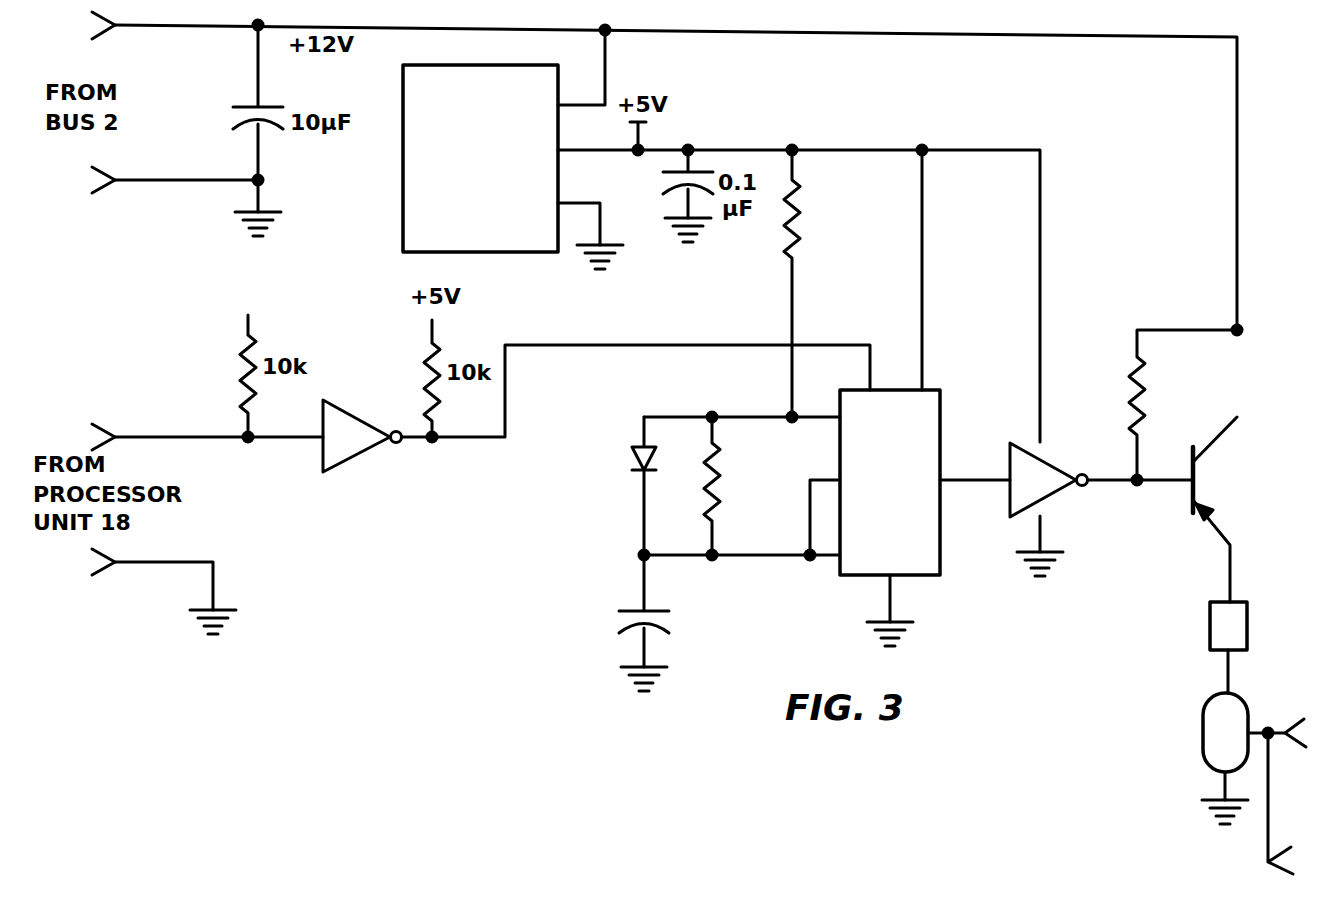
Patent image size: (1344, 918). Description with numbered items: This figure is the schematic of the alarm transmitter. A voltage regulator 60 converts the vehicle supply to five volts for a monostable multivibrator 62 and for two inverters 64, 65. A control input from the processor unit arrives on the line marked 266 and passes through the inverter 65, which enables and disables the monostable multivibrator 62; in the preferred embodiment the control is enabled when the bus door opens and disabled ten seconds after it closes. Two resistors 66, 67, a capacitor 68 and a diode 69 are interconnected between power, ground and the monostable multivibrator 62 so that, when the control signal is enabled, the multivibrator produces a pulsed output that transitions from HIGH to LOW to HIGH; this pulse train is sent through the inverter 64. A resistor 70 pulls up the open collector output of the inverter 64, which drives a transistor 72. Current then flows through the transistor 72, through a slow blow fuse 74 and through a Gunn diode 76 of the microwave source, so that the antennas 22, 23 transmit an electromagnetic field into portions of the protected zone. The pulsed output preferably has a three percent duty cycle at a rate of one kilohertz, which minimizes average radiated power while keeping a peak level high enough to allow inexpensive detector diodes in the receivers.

The voltage regulator 60 is at (402, 219).
The monostable multivibrator 62 is at (942, 562).
The inverter 64 is at (1056, 460).
The inverter 65 is at (348, 408).
The resistor 66 is at (797, 214).
The resistor 67 is at (722, 462).
The capacitor 68 is at (655, 612).
The diode 69 is at (632, 452).
The resistor 70 is at (1145, 370).
The transistor 72 is at (1215, 528).
The slow blow fuse 74 is at (1248, 632).
The Gunn diode 76 is at (1201, 729).
The antenna 22 is at (1302, 726).
The antenna 23 is at (1286, 846).
The signal line from processor unit 18 266 is at (178, 436).